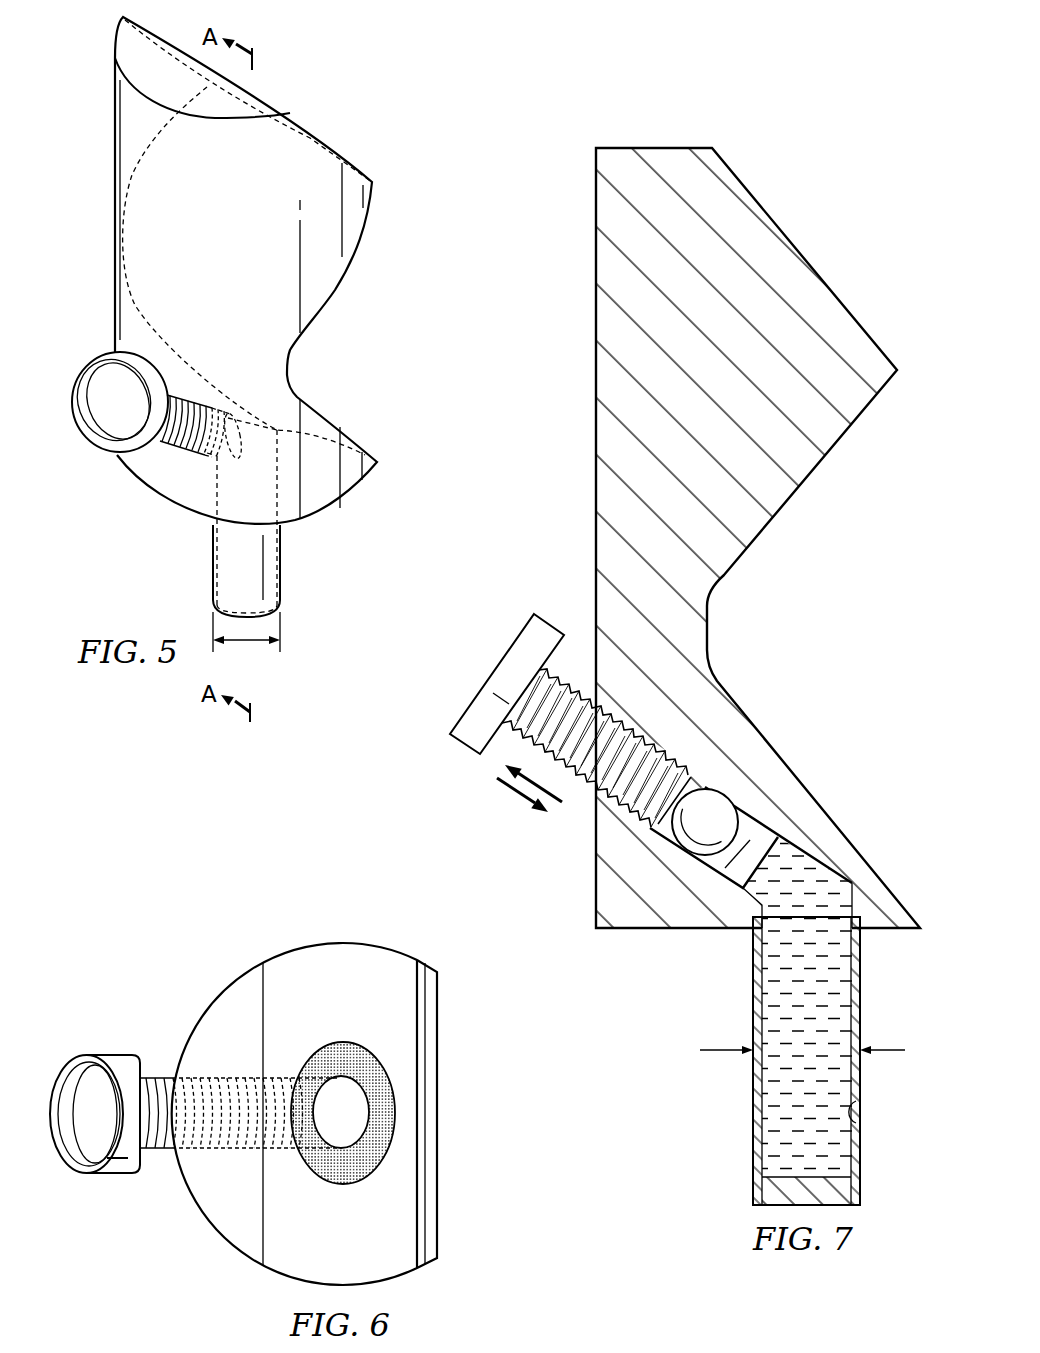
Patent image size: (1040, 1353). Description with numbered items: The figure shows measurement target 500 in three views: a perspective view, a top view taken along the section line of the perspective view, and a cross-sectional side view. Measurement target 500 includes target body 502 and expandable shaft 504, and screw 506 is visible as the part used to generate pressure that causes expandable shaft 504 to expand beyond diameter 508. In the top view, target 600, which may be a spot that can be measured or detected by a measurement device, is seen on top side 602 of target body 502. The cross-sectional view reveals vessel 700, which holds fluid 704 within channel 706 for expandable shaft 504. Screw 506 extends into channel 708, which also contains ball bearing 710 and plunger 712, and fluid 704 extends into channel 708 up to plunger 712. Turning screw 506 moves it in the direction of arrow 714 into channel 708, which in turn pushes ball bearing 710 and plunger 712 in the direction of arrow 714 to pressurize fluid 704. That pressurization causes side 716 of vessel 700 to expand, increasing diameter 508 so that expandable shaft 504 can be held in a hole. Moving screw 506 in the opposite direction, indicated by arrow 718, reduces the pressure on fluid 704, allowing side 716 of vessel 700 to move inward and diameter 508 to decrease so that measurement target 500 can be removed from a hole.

In FIG. 5, the measurement target 500 is at (272, 58).
In FIG. 6, the measurement target 500 is at (164, 938).
In FIG. 7, the measurement target 500 is at (731, 95).
In FIG. 5, the target body 502 is at (309, 298).
In FIG. 6, the target body 502 is at (246, 970).
In FIG. 7, the target body 502 is at (600, 433).
In FIG. 5, the expandable shaft 504 is at (213, 558).
In FIG. 7, the expandable shaft 504 is at (752, 1065).
In FIG. 5, the screw 506 is at (98, 446).
In FIG. 6, the screw 506 is at (105, 1176).
In FIG. 7, the screw 506 is at (500, 657).
In FIG. 5, the diameter 508 is at (251, 644).
In FIG. 7, the diameter 508 is at (700, 1050).
In FIG. 6, the target 600 is at (350, 1185).
In FIG. 7, the target 600 is at (790, 238).
In FIG. 6, the top side 602 is at (318, 960).
In FIG. 7, the top side 602 is at (658, 147).
In FIG. 7, the vessel 700 is at (733, 1017).
In FIG. 7, the fluid 704 is at (775, 1112).
In FIG. 7, the channel 706 is at (858, 1112).
In FIG. 7, the channel 708 is at (760, 795).
In FIG. 7, the ball bearing 710 is at (706, 838).
In FIG. 7, the plunger 712 is at (768, 862).
In FIG. 7, the arrow 714 is at (520, 797).
In FIG. 7, the side 716 is at (862, 1012).
In FIG. 7, the arrow 718 is at (548, 788).